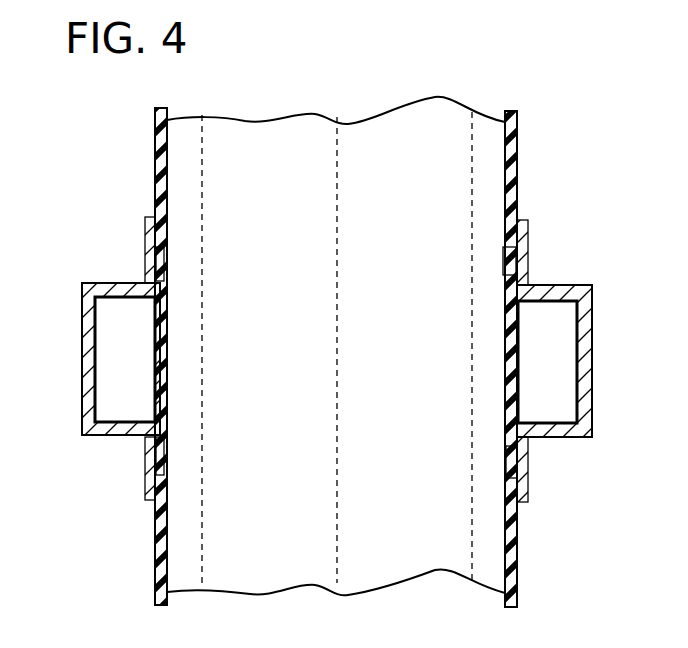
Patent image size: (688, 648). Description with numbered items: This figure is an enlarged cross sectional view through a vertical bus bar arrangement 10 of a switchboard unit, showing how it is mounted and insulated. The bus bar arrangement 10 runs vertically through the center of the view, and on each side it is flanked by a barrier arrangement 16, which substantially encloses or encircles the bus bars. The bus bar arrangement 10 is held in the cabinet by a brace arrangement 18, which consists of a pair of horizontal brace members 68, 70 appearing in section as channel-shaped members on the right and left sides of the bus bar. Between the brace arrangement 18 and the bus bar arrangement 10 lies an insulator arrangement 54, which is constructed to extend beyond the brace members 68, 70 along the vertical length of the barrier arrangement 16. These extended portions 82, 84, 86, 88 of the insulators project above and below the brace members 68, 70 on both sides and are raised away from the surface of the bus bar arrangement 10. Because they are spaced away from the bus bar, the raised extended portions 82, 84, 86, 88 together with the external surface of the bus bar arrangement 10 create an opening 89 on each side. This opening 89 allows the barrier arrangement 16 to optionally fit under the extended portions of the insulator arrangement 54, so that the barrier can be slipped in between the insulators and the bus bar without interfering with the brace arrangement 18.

The bus bar arrangement 10 is at (396, 562).
The barrier arrangement 16 is at (160, 158).
The brace arrangement 18 is at (627, 478).
The insulator arrangement 54 is at (579, 498).
The brace member 68 is at (586, 378).
The brace member 70 is at (86, 378).
The extended portion 82 is at (528, 500).
The extended portion 84 is at (524, 228).
The extended portion 86 is at (148, 496).
The extended portion 88 is at (150, 226).
The opening 89 is at (152, 268).